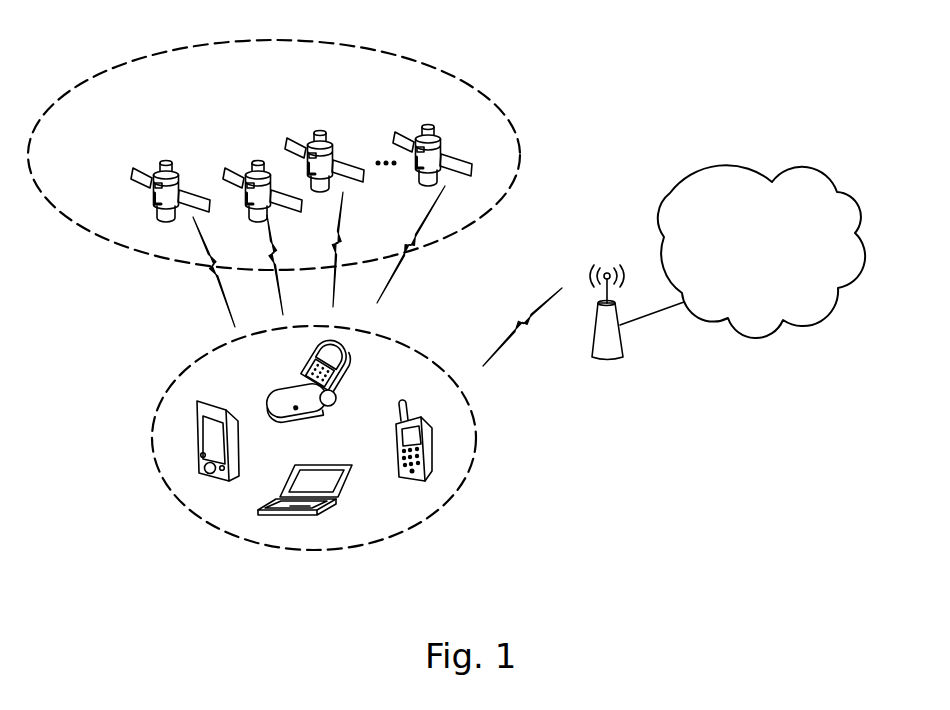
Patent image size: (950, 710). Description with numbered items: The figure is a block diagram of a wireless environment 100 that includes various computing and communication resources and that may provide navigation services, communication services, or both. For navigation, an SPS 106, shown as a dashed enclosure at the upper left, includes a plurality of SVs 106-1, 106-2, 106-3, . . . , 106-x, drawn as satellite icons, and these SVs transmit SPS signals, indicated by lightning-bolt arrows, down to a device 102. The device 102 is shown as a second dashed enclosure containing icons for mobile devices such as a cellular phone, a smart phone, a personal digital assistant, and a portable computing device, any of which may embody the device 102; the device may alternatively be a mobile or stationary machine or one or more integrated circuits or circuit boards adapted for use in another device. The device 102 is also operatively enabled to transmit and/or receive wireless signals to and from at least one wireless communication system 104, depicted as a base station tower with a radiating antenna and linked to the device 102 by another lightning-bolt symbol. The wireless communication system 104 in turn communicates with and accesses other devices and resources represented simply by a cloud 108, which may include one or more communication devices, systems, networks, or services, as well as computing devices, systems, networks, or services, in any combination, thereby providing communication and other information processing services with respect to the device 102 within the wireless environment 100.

The wireless environment 100 is at (669, 99).
The device 102 is at (412, 527).
The wireless communication system 104 is at (620, 368).
The SPS 106 is at (137, 250).
The SV 106-1 is at (160, 158).
The SV 106-2 is at (233, 142).
The SV 106-3 is at (320, 130).
The SV 106-x is at (427, 127).
The cloud 108 is at (745, 337).